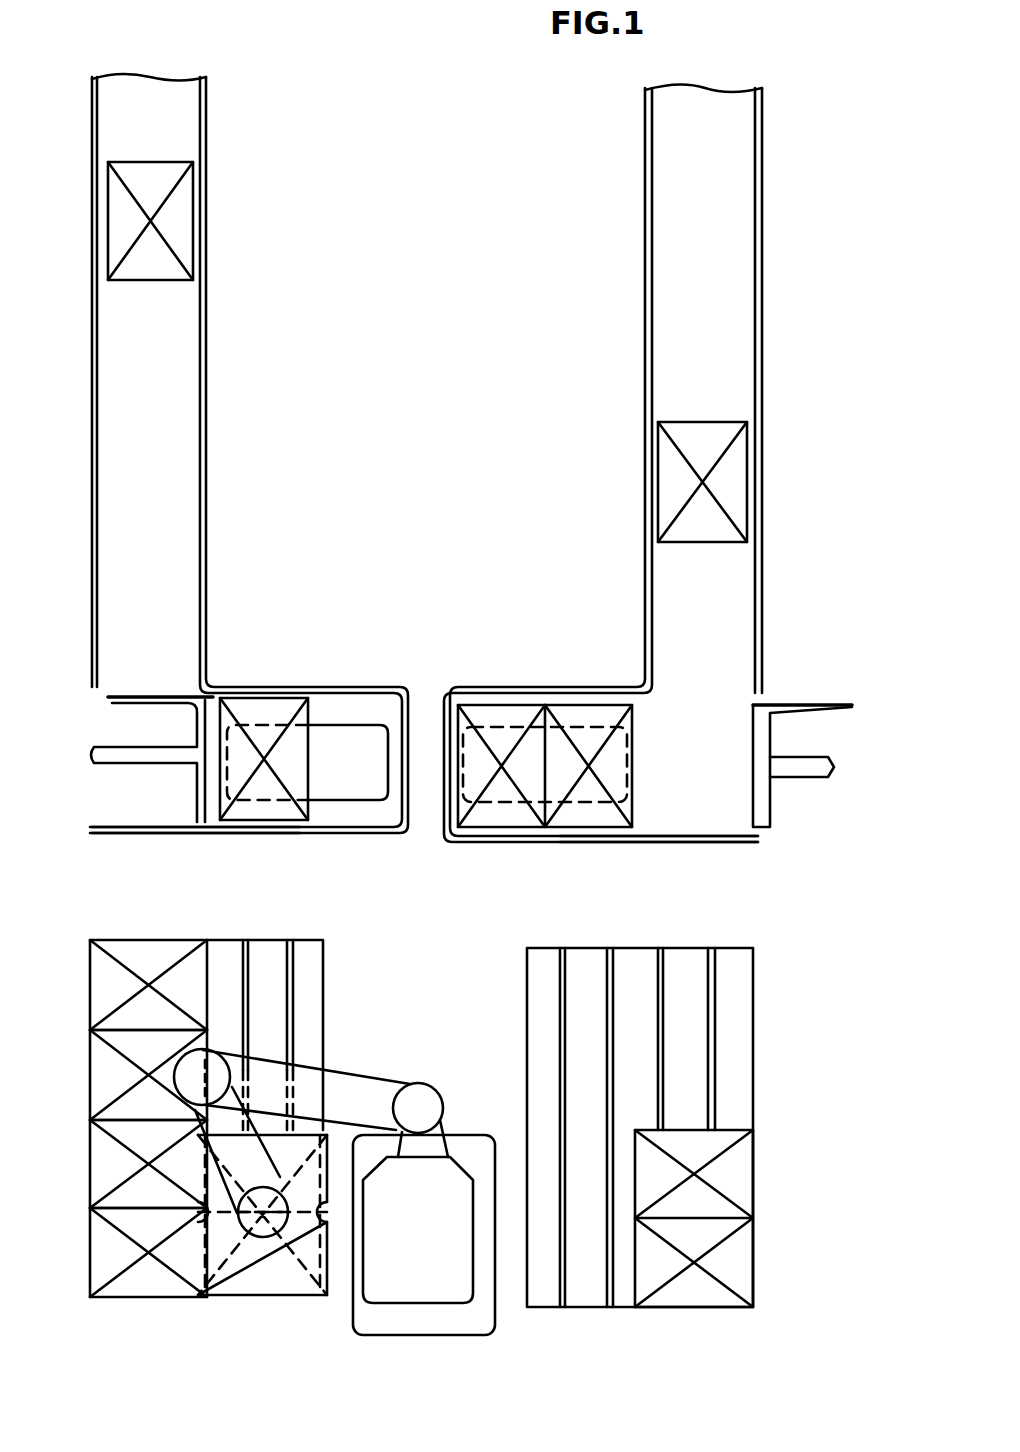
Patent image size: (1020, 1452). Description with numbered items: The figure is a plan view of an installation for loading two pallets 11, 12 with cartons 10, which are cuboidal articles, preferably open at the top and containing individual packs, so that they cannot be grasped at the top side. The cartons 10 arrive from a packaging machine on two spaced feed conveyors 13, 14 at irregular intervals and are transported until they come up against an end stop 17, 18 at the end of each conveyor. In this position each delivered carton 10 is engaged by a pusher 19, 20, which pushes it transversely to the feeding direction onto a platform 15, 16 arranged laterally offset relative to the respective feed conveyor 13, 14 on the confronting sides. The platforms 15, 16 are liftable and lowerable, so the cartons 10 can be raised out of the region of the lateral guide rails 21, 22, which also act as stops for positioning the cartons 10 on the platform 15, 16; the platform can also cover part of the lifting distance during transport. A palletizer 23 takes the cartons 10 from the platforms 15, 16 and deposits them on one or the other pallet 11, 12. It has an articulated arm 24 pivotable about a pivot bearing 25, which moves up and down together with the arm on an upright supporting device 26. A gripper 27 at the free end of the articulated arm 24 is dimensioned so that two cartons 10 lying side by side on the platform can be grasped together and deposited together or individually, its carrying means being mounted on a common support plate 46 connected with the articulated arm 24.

The cartons 10 is at (178, 233).
The pallet 11 is at (323, 993).
The pallet 12 is at (758, 1007).
The feed conveyor 13 is at (249, 480).
The feed conveyor 14 is at (652, 487).
The platform 15 is at (350, 743).
The platform 16 is at (493, 727).
The end stop 17 is at (140, 833).
The end stop 18 is at (722, 847).
The pusher 19 is at (167, 697).
The pusher 20 is at (772, 738).
The lateral guide rail 21 is at (310, 683).
The lateral guide rail 22 is at (468, 688).
The palletizer 23 is at (336, 1163).
The articulated arm 24 is at (365, 1037).
The pivot bearing 25 is at (420, 1105).
The upright supporting device 26 is at (408, 1275).
The gripper 27 is at (257, 1307).
The support plate 46 is at (225, 1297).